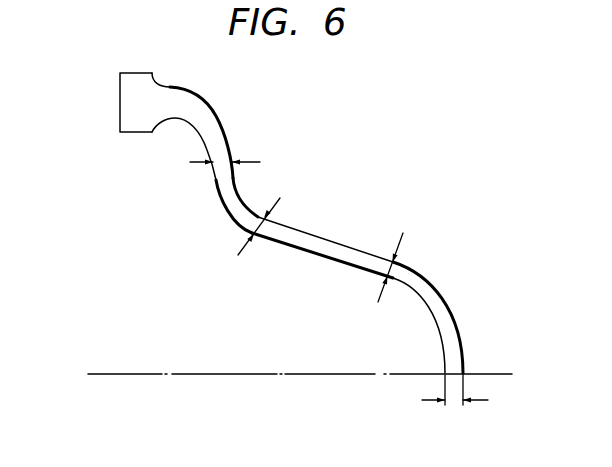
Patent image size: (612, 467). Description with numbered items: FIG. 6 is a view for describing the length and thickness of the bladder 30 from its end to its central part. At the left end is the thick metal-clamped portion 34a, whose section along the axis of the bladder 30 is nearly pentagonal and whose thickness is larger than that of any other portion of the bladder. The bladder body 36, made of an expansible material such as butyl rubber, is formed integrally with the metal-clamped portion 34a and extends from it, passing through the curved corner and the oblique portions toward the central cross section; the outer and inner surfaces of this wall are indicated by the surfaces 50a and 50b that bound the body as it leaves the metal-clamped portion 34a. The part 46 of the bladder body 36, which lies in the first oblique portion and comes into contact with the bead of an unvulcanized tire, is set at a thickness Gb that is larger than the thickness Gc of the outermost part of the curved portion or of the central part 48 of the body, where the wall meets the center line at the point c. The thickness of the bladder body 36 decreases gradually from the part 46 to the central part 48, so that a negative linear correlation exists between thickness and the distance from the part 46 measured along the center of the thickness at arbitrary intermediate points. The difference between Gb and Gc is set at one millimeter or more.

The bladder 30 is at (378, 195).
The metal-clamped portion 34a is at (123, 172).
The bladder body 36 is at (330, 262).
The part of the bladder body 46 is at (234, 156).
The central part 48 is at (465, 371).
The outer bend surface 50a is at (175, 71).
The inner bend surface 50b is at (172, 121).
The thickness of the bead-contacting part Gb is at (213, 172).
The thickness of the central part Gc is at (455, 401).
The end point c is at (453, 373).